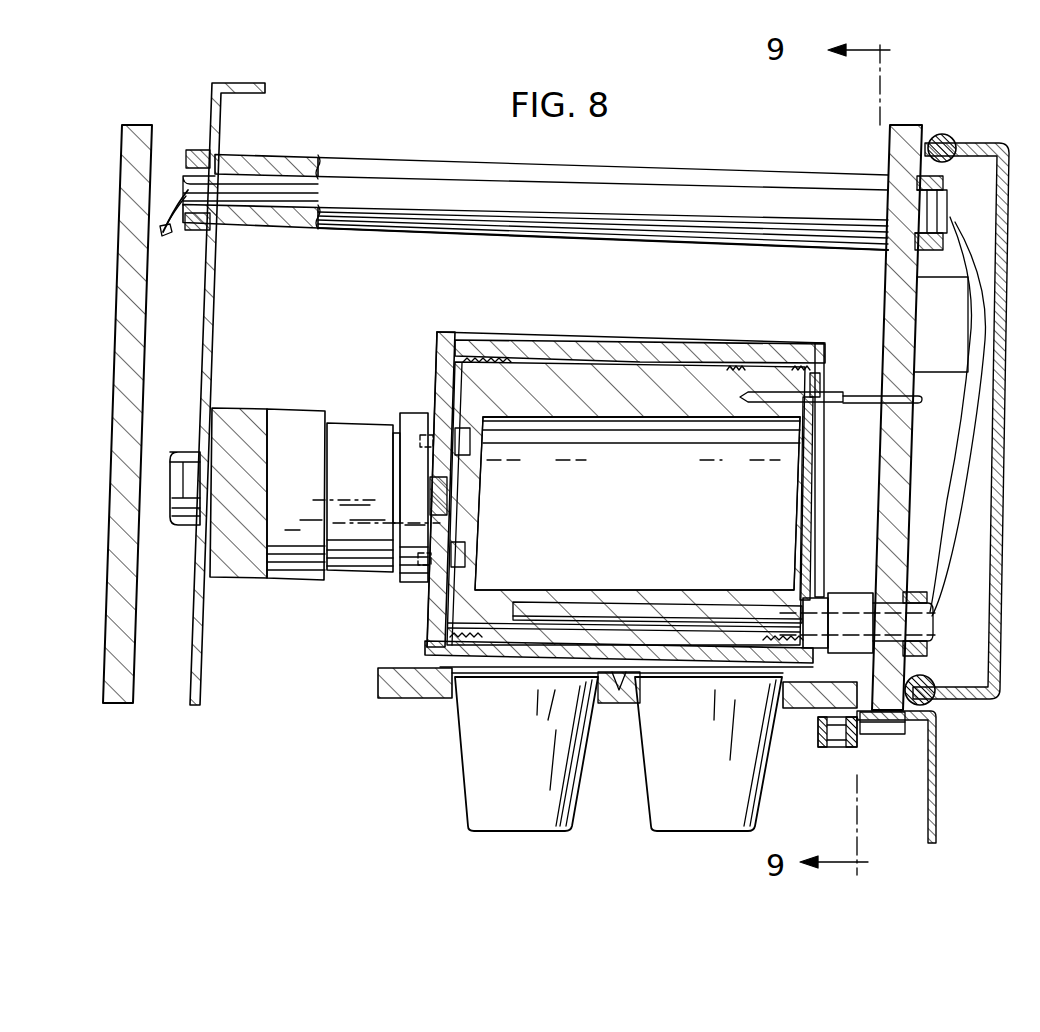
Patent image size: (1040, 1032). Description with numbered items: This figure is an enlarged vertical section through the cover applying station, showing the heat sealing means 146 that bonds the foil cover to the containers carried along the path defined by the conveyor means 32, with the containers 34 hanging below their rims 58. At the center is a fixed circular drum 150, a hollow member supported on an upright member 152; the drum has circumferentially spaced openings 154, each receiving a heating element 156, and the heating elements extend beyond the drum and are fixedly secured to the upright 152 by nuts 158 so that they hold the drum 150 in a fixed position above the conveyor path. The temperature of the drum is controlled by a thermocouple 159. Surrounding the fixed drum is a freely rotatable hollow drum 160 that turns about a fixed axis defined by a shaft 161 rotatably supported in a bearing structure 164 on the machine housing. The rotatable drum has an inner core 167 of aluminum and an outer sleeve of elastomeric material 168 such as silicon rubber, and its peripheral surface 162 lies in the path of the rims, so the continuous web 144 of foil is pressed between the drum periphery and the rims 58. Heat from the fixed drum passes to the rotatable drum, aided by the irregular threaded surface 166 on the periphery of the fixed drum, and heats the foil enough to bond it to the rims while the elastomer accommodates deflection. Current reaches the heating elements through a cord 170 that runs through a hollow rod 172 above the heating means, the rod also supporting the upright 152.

The conveyor means 32 is at (356, 673).
The buckets 34 is at (536, 784).
The container rims 58 is at (440, 660).
The continuous web of foil 144 is at (440, 644).
The heat sealing means 146 is at (390, 302).
The fixed circular drum 150 is at (568, 405).
The upright member 152 is at (891, 300).
The openings 154 is at (560, 603).
The heating element 156 is at (643, 616).
The nuts 158 is at (915, 588).
The thermocouple 159 is at (855, 395).
The freely rotatable hollow drum 160 is at (490, 343).
The shaft 161 is at (393, 430).
The peripheral surface 162 is at (590, 340).
The bearing structure 164 is at (295, 435).
The irregular surface 166 is at (517, 365).
The inner core 167 is at (440, 350).
The outer sleeve of elastomeric material 168 is at (482, 340).
The cord 170 is at (172, 205).
The hollow rod 172 is at (270, 166).